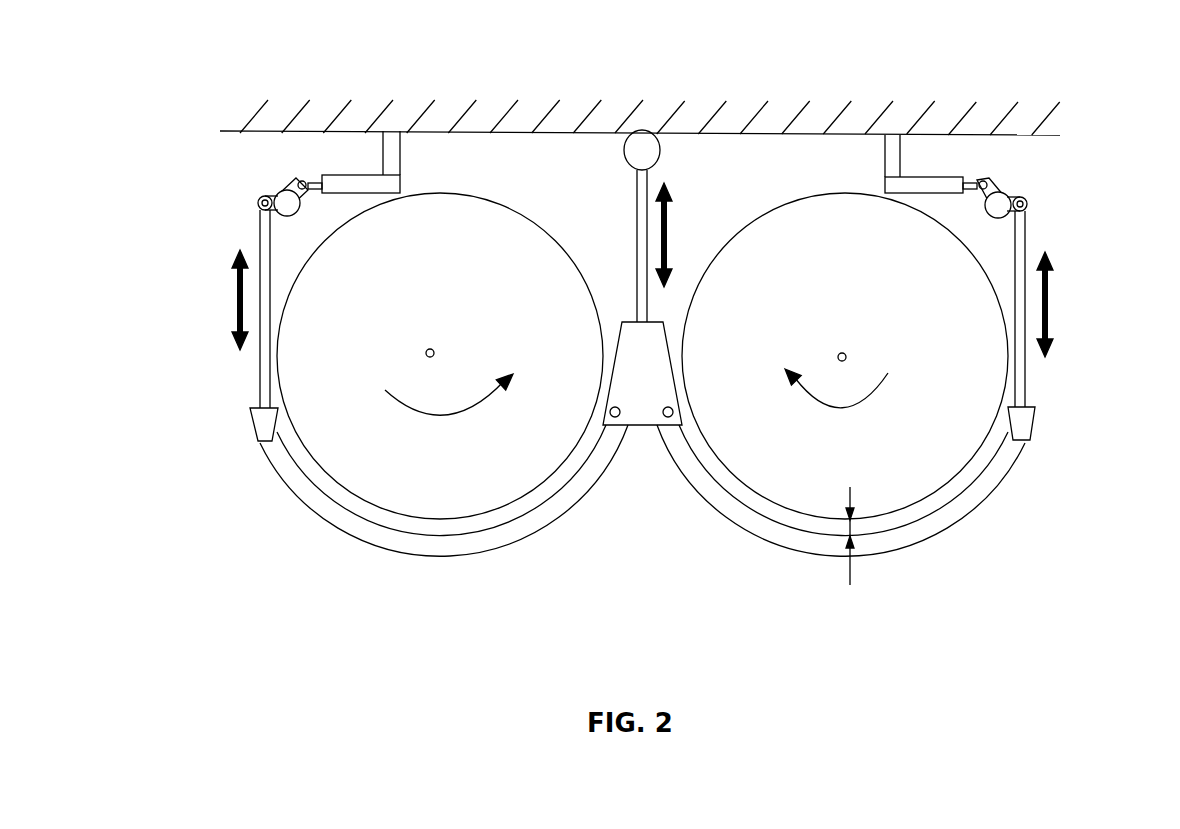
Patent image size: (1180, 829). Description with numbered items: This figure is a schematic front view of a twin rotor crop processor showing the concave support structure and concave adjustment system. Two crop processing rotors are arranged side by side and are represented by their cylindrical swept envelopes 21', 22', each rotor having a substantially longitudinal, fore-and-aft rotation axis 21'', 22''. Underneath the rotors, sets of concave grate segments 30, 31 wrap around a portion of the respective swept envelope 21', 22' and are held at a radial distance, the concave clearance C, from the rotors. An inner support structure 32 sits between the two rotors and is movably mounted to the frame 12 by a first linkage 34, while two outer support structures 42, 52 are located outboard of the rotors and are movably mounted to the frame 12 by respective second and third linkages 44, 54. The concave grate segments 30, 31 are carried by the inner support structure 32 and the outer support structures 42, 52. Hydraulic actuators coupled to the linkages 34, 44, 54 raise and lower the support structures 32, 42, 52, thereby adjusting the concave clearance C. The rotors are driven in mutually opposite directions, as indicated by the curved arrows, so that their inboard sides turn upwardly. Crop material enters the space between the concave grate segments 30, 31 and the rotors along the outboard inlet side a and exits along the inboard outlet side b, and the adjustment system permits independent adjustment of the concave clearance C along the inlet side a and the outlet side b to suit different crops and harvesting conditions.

The frame 12 is at (1060, 117).
The swept envelope 22' is at (440, 341).
The rotation axis 22'' is at (466, 318).
The swept envelope 21' is at (845, 339).
The rotation axis 21'' is at (878, 327).
The first linkage 34 is at (637, 222).
The inner support structure 32 is at (645, 432).
The set of concave grate segments 31 is at (360, 532).
The set of concave grate segments 30 is at (970, 507).
The third linkage 54 is at (258, 370).
The outer support structure 52 is at (263, 427).
The second linkage 44 is at (1023, 293).
The outer support structure 42 is at (1033, 428).
The outboard side a is at (290, 435).
The inboard side b is at (588, 440).
The concave clearance C is at (848, 503).